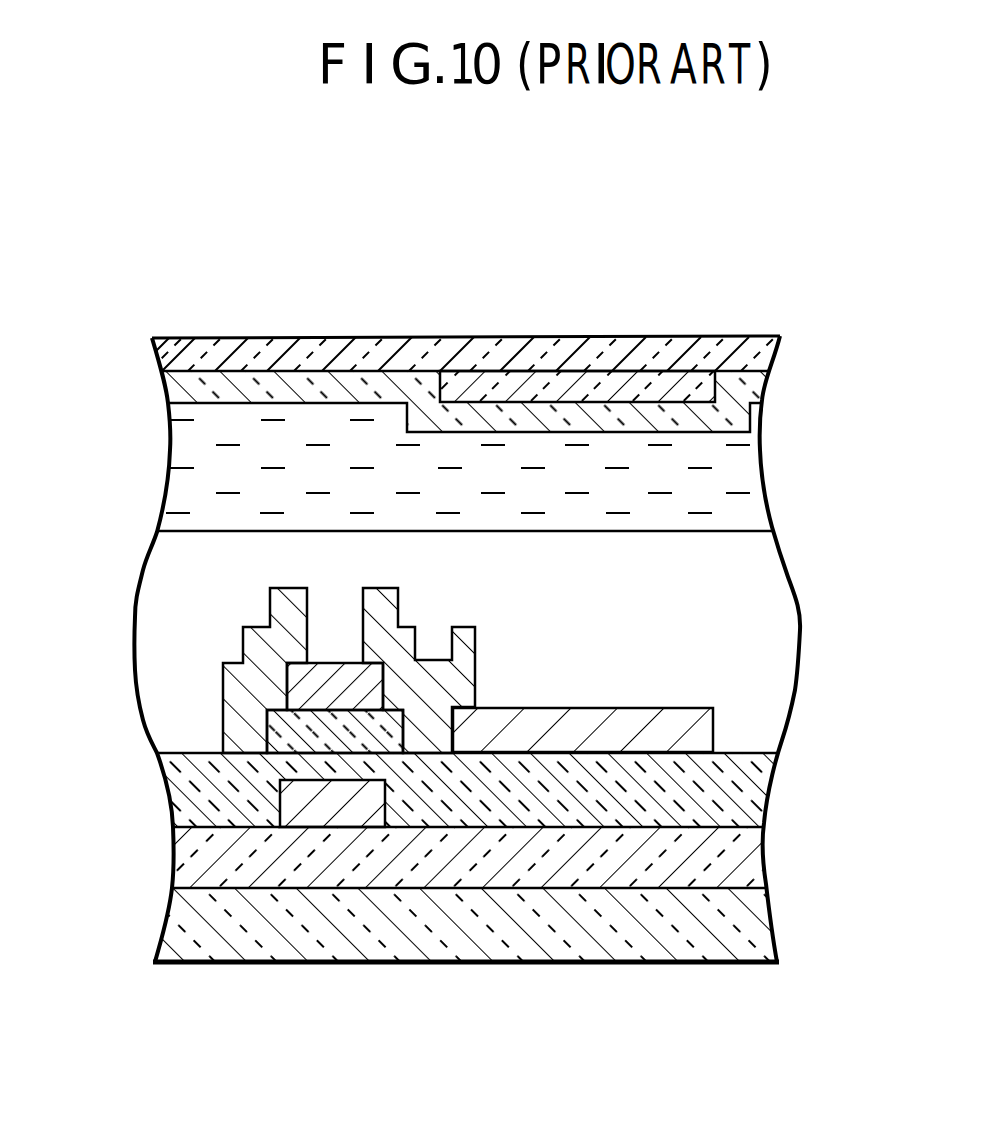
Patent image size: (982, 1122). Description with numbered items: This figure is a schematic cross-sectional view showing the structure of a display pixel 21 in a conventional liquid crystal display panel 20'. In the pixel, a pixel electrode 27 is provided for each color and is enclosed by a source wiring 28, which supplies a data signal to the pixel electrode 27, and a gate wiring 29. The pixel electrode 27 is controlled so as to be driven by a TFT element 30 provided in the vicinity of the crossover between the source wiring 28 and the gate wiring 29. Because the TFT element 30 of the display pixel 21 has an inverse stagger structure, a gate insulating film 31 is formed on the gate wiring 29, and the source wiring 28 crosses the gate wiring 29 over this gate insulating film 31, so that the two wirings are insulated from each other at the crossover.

The prior art liquid crystal display panel 20' is at (470, 582).
The display pixel 21 is at (565, 310).
The pixel electrode 27 is at (705, 733).
The source wiring 28 is at (283, 607).
The gate wiring 29 is at (303, 818).
The TFT element 30 is at (512, 658).
The gate insulating film 31 is at (183, 795).